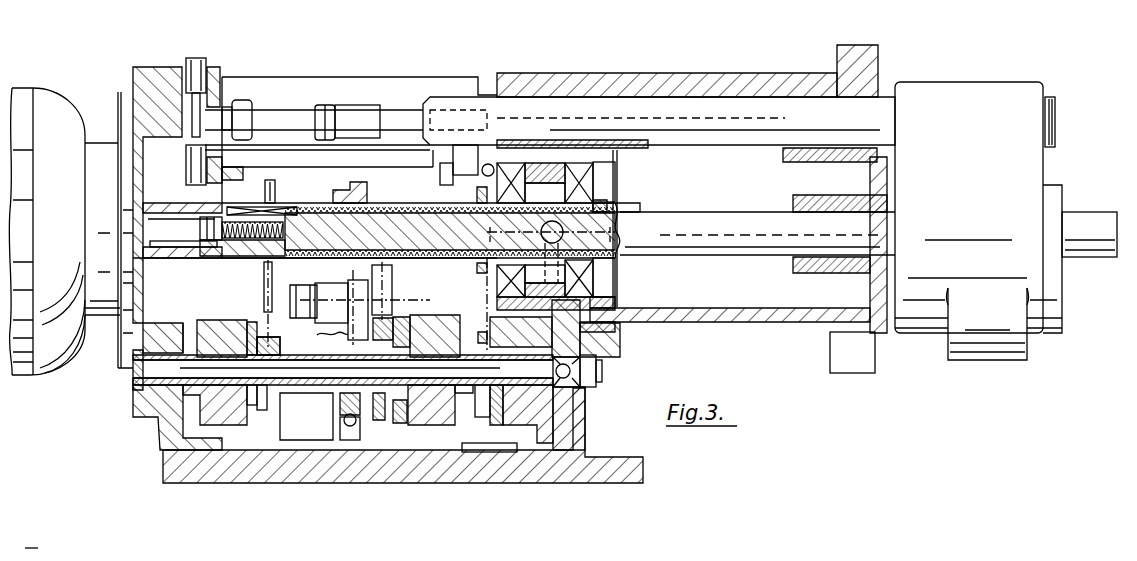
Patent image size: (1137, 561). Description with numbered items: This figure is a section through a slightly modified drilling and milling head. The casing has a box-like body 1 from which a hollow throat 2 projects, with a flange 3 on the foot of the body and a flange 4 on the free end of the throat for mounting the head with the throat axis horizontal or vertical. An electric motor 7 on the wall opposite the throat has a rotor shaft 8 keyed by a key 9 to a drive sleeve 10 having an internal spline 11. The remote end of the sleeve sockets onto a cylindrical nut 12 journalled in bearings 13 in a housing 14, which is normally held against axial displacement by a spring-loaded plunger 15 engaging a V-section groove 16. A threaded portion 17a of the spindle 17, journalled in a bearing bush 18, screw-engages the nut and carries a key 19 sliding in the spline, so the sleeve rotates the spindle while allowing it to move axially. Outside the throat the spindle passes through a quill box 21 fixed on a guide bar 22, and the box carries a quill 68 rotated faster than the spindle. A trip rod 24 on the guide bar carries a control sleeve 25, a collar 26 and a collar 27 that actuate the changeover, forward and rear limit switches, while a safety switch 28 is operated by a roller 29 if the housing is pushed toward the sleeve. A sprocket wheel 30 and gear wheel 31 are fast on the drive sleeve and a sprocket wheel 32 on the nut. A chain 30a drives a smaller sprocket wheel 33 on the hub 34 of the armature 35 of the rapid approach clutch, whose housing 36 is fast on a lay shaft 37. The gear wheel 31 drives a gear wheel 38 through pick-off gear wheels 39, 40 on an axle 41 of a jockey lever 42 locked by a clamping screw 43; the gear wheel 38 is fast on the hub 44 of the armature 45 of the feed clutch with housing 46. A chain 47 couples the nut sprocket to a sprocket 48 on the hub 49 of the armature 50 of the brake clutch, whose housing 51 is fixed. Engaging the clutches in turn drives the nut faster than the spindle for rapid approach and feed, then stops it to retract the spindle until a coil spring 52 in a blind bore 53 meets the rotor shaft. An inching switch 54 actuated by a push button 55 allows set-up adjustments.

The box-like body 1 is at (140, 67).
The hollow throat 2 is at (570, 73).
The flange 3 is at (577, 470).
The flange 4 is at (842, 353).
The electric motor 7 is at (26, 88).
The rotor shaft 8 is at (152, 205).
The key 9 is at (167, 250).
The drive sleeve 10 is at (283, 259).
The internal longitudinal spline 11 is at (376, 205).
The cylindrical nut 12 is at (606, 206).
The bearings 13 is at (498, 173).
The housing 14 is at (597, 297).
The spring-loaded plunger 15 is at (552, 262).
The V-section groove 16 is at (558, 183).
The spindle 17 is at (652, 242).
The threaded portion 17a is at (402, 213).
The bearing bush 18 is at (788, 262).
The drive-transmitting key 19 is at (280, 207).
The quill box 21 is at (1013, 88).
The guide bar 22 is at (515, 97).
The trip rod 24 is at (398, 108).
The control sleeve 25 is at (355, 105).
The collar 26 is at (325, 105).
The collar 27 is at (240, 100).
The safety switch 28 is at (455, 170).
The roller 29 is at (485, 163).
The sprocket wheel 30 is at (265, 188).
The chain 30a is at (270, 300).
The gear wheel 31 is at (333, 180).
The sprocket wheel 32 is at (482, 272).
The sprocket wheel 33 is at (277, 412).
The hub 34 is at (258, 405).
The armature 35 is at (257, 453).
The cylindrical housing 36 is at (233, 440).
The lay shaft 37 is at (133, 370).
The gear wheel 38 is at (360, 455).
The pick-off gear wheel 39 is at (357, 295).
The pick-off gear wheel 40 is at (370, 280).
The axle 41 is at (392, 299).
The jockey lever 42 is at (322, 335).
The clamping screw 43 is at (343, 440).
The hub 44 is at (357, 398).
The armature 45 is at (395, 427).
The cylindrical housing 46 is at (427, 423).
The chain 47 is at (485, 299).
The sprocket 48 is at (480, 417).
The hub 49 is at (468, 393).
The armature 50 is at (495, 423).
The cylindrical housing 51 is at (540, 423).
The coil spring 52 is at (213, 258).
The blind axial bore 53 is at (243, 258).
The inching switch 54 is at (186, 153).
The push button 55 is at (195, 58).
The quill 68 is at (1070, 217).